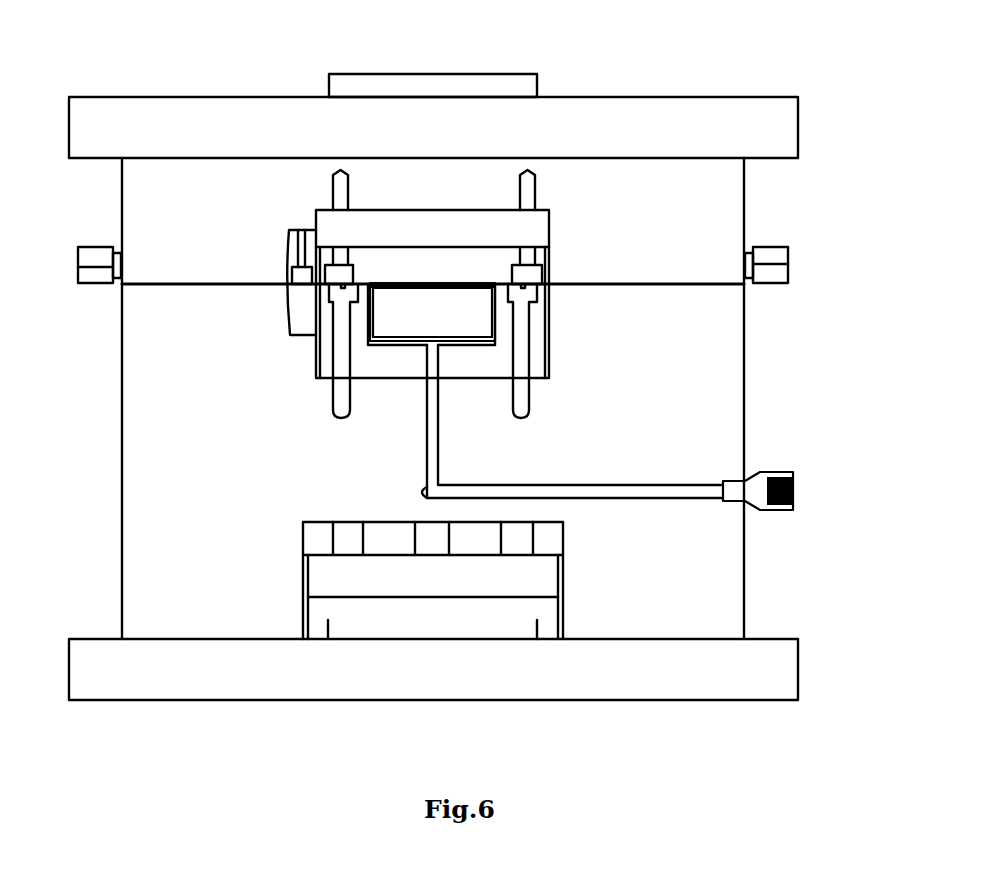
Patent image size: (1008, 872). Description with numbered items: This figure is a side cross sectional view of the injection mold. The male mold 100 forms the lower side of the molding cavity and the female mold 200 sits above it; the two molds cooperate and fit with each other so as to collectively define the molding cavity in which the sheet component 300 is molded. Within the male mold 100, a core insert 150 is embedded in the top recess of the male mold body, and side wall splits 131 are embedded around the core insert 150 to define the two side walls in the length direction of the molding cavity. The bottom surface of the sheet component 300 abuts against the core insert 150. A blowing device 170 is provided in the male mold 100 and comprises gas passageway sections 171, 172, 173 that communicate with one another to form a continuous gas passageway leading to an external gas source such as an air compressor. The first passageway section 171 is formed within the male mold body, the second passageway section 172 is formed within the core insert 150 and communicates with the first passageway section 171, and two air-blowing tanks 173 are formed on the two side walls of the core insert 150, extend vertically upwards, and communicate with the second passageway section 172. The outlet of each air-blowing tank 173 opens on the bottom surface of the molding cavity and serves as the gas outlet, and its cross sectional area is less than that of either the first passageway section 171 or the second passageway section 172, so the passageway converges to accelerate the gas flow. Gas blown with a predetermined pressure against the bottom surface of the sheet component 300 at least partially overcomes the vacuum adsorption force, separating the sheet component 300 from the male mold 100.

The male mold 100 is at (718, 573).
The female mold 200 is at (725, 208).
The side wall split 131 is at (433, 312).
The core insert 150 is at (427, 317).
The blowing device 170 is at (797, 492).
The first passageway section 171 is at (395, 422).
The second passageway section 172 is at (462, 341).
The air-blowing tank 173 is at (368, 312).
The sheet component 300 is at (467, 282).